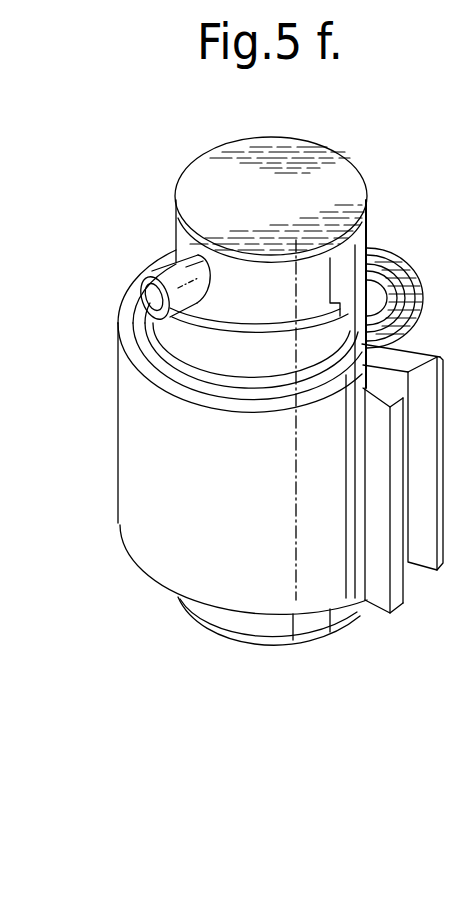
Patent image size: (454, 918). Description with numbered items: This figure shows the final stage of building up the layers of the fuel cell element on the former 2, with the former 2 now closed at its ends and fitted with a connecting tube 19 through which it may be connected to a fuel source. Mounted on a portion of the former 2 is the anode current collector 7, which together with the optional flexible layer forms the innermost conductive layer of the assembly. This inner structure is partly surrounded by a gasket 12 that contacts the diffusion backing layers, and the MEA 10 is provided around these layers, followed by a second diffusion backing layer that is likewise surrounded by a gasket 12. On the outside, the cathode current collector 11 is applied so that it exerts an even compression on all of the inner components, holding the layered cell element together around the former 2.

The former 2 is at (361, 219).
The anode current collector 7 is at (366, 268).
The MEA 10 is at (162, 334).
The cathode current collector 11 is at (133, 285).
The gasket 12 is at (166, 335).
The connecting tube 19 is at (145, 282).